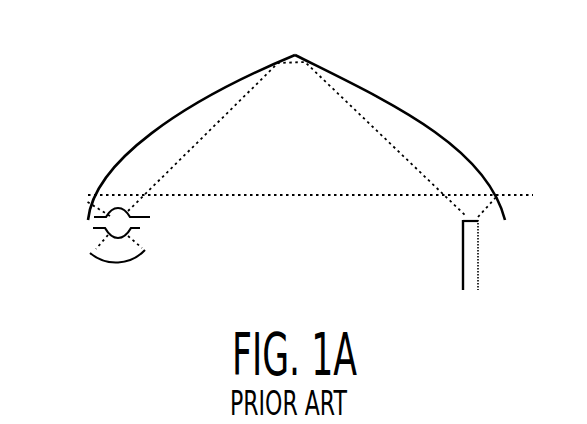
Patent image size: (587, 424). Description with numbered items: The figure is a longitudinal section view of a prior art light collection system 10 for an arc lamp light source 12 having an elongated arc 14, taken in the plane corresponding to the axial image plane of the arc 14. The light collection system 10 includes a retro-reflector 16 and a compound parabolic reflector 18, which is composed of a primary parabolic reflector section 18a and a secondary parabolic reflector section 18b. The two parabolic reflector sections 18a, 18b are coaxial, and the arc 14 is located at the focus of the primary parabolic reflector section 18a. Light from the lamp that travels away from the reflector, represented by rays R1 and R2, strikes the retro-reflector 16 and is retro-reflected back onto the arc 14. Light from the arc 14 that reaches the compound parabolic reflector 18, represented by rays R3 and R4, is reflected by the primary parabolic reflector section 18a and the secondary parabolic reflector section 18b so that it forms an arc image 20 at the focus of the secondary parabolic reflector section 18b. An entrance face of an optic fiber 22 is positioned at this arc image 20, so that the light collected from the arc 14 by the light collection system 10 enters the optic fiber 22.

The light collection system 10 is at (105, 93).
The arc lamp light source 12 is at (140, 228).
The elongated arc 14 is at (150, 217).
The retro-reflector 16 is at (118, 270).
The compound parabolic reflector 18 is at (199, 100).
The primary parabolic reflector section 18a is at (249, 78).
The secondary parabolic reflector section 18b is at (403, 107).
The arc image 20 is at (460, 220).
The optic fiber 22 is at (480, 270).
The ray R1 is at (93, 250).
The ray R2 is at (147, 248).
The ray R3 is at (88, 210).
The ray R4 is at (187, 155).